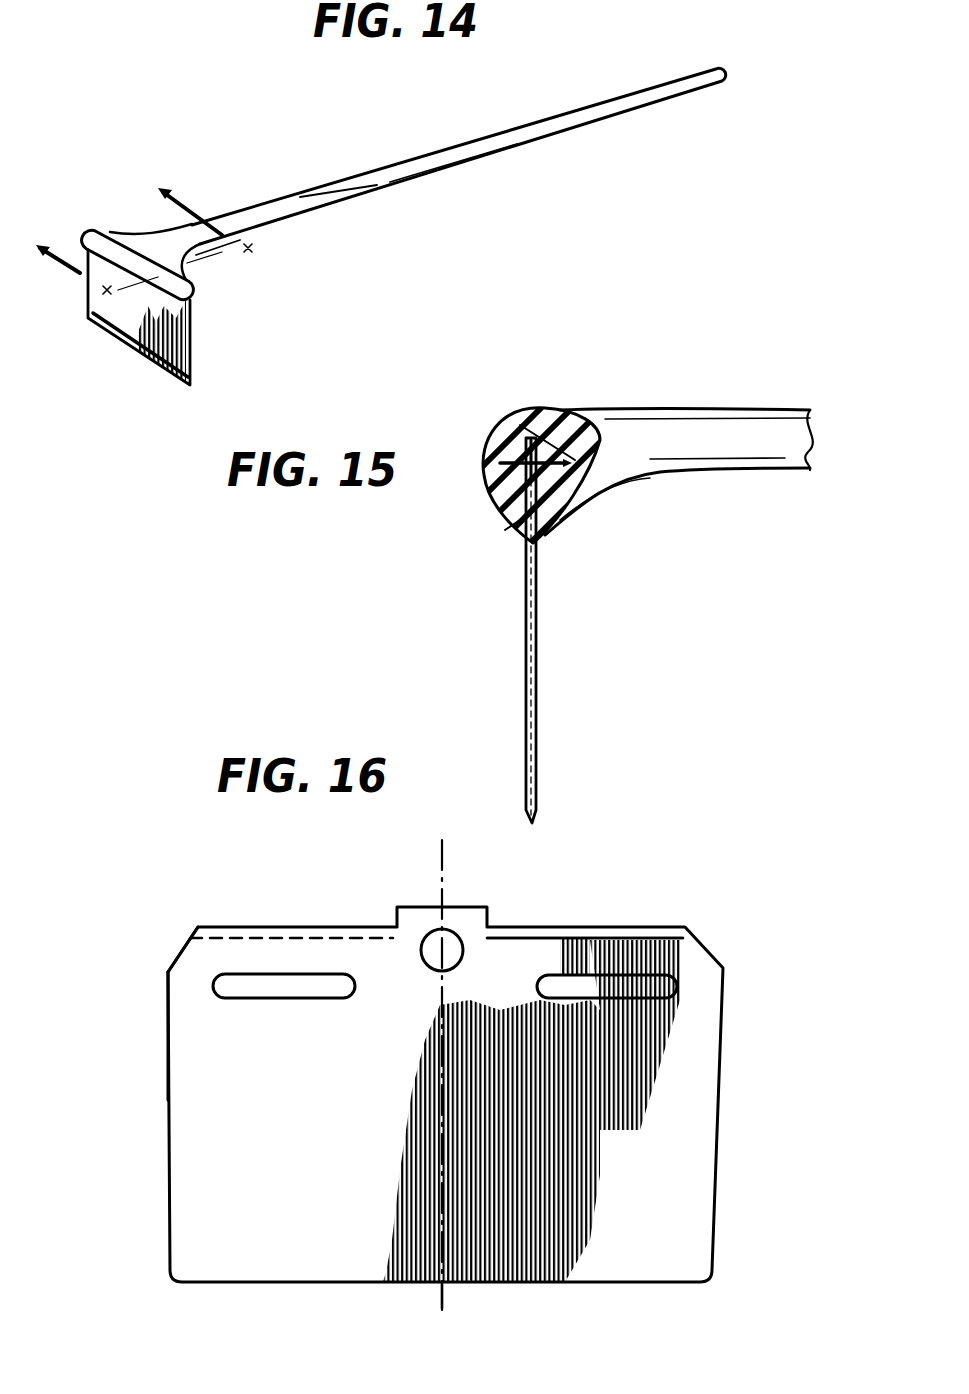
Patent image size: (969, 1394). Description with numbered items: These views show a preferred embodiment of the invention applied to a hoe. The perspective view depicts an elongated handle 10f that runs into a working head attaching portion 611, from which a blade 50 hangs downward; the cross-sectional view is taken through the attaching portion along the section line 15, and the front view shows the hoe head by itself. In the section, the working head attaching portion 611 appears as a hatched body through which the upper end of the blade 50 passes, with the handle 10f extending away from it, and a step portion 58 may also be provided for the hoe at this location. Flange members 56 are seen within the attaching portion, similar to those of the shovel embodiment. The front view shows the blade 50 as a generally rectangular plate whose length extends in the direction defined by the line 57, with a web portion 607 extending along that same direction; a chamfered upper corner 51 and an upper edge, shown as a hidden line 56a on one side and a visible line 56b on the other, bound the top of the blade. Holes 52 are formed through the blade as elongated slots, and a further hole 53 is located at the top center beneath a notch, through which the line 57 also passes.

In FIG. 14, the handle 10f is at (417, 160).
In FIG. 15, the handle 10f is at (765, 420).
In FIG. 14, the working head attaching portion 611 is at (105, 228).
In FIG. 15, the working head attaching portion 611 is at (511, 408).
In FIG. 14, the section line 15— 15 is at (135, 231).
In FIG. 14, the blade 50 is at (196, 345).
In FIG. 15, the blade 50 is at (537, 650).
In FIG. 16, the blade 50 is at (717, 1137).
In FIG. 15, the step portion 58 is at (557, 420).
In FIG. 15, the flange members 56 is at (483, 487).
In FIG. 15, the hole 52 is at (505, 527).
In FIG. 16, the hole 52 is at (660, 987).
In FIG. 16, the chamfered corner 51 is at (183, 956).
In FIG. 16, the web portion 607 is at (172, 1004).
In FIG. 16, the hidden line 56a is at (293, 936).
In FIG. 16, the top edge line 56b is at (613, 936).
In FIG. 16, the hole 53 is at (460, 931).
In FIG. 16, the line defining direction of blade length 57 is at (443, 1295).